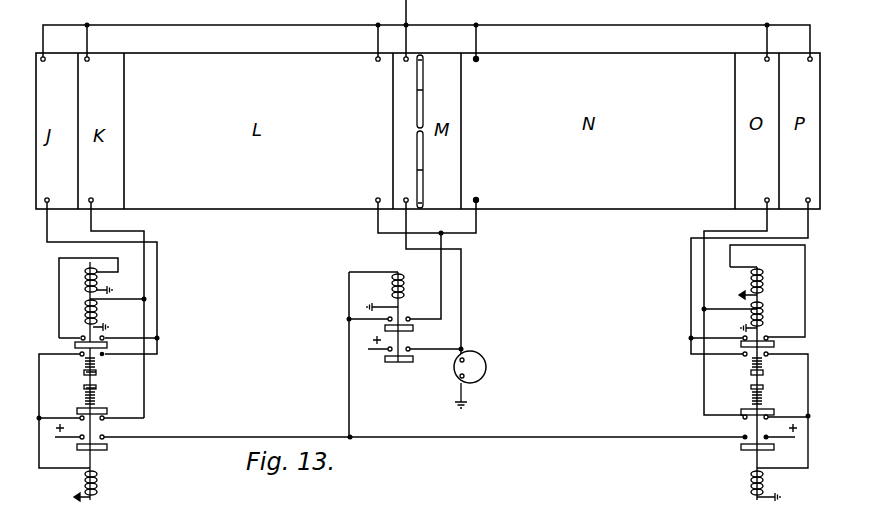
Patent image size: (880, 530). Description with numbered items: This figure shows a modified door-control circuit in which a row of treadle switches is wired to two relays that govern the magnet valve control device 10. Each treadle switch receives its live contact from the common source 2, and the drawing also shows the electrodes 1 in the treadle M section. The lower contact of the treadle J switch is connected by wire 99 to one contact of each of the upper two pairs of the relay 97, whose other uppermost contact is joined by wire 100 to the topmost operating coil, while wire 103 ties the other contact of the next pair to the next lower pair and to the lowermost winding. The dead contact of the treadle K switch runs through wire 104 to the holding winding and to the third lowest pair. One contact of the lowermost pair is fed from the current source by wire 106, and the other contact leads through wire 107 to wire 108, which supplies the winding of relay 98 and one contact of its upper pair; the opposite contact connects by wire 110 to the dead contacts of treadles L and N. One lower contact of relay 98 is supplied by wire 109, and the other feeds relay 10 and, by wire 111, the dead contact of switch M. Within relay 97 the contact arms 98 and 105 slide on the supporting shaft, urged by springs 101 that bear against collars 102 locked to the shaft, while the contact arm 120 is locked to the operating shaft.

The common source 2 is at (410, 6).
The tube electrode 1 is at (440, 153).
The control device 10 is at (487, 365).
The relay 97 is at (82, 302).
The relay 98 is at (75, 345).
The wire 99 is at (159, 300).
The wire 100 is at (59, 270).
The springs 101 is at (99, 361).
The collars 102 is at (100, 378).
The wire 103 is at (38, 388).
The wire 104 is at (146, 388).
The contact arm 105 is at (108, 411).
The wire 106 is at (74, 444).
The wire 107 is at (426, 424).
The wire 108 is at (350, 393).
The wire 109 is at (385, 358).
The wire 110 is at (442, 287).
The wire 111 is at (462, 316).
The contact arm 120 is at (108, 450).